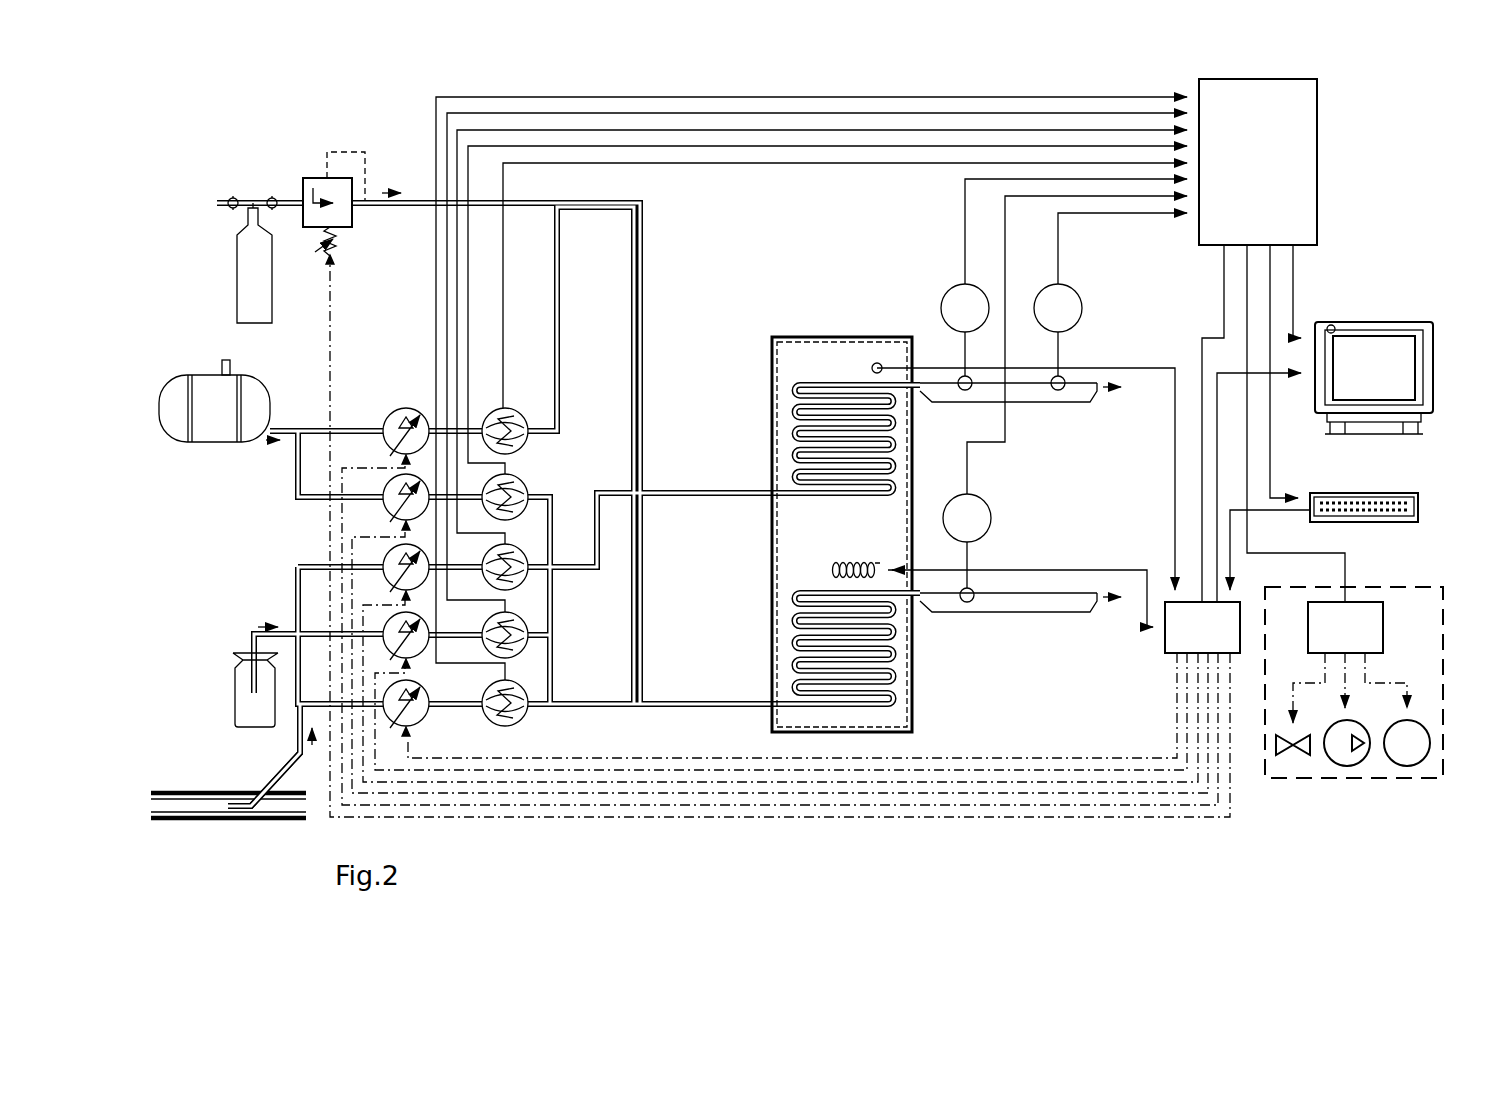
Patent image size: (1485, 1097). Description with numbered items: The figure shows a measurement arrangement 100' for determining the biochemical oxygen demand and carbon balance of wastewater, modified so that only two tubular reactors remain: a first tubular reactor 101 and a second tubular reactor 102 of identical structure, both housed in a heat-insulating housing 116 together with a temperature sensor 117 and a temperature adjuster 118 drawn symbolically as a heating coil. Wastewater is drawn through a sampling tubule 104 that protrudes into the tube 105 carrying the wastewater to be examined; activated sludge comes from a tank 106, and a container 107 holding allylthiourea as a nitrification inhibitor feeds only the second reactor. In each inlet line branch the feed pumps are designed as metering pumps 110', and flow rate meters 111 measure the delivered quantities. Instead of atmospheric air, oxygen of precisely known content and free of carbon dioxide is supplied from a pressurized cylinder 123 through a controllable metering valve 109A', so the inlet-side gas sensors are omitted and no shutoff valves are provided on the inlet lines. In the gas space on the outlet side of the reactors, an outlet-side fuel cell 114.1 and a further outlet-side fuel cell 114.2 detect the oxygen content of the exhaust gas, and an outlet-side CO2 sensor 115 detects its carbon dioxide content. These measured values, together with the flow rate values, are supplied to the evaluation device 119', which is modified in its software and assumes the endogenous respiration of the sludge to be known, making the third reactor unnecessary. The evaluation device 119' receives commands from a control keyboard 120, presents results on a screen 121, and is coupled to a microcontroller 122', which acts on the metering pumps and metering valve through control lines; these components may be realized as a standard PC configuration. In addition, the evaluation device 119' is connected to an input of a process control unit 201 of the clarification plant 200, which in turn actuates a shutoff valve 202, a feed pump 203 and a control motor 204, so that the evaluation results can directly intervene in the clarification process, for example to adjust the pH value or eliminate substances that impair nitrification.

The measurement arrangement 100' is at (911, 55).
The controllable metering valve 109A' is at (310, 160).
The pressurized cylinder 123 is at (237, 282).
The metering pumps 110' is at (397, 520).
The flow rate meter 111 is at (530, 418).
The activated sludge tank 106 is at (210, 441).
The container 107 is at (235, 688).
The tube 105 is at (207, 793).
The sampling tubule 104 is at (235, 808).
The first tubular reactor 101 is at (795, 425).
The second tubular reactor 102 is at (795, 630).
The heat-insulating housing 116 is at (912, 668).
The temperature sensor 117 is at (875, 362).
The temperature adjuster 118 is at (830, 572).
The outlet-side fuel cell 114.1 is at (943, 292).
The outlet-side fuel cell 114.2 is at (988, 502).
The outlet-side CO2 sensor 115 is at (1082, 292).
The evaluation device 119' is at (1325, 162).
The screen 121 is at (1380, 322).
The control keyboard 120 is at (1380, 474).
The microcontroller 122' is at (1152, 651).
The clarification plant 200 is at (1445, 665).
The process control unit 201 is at (1360, 602).
The shutoff valve 202 is at (1290, 758).
The feed pump 203 is at (1347, 767).
The control motor 204 is at (1417, 765).